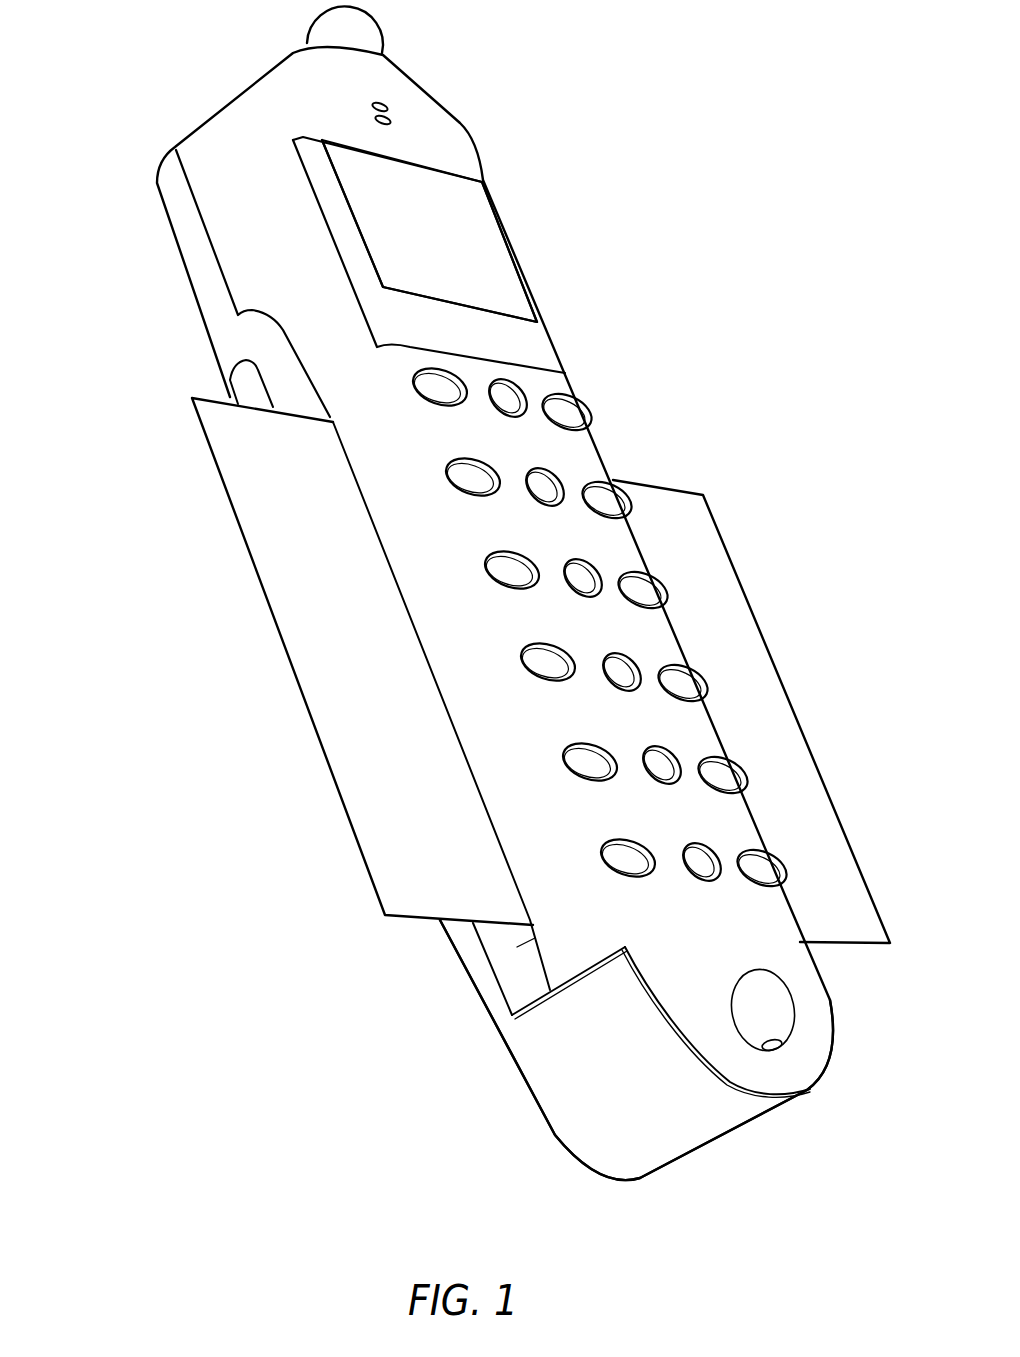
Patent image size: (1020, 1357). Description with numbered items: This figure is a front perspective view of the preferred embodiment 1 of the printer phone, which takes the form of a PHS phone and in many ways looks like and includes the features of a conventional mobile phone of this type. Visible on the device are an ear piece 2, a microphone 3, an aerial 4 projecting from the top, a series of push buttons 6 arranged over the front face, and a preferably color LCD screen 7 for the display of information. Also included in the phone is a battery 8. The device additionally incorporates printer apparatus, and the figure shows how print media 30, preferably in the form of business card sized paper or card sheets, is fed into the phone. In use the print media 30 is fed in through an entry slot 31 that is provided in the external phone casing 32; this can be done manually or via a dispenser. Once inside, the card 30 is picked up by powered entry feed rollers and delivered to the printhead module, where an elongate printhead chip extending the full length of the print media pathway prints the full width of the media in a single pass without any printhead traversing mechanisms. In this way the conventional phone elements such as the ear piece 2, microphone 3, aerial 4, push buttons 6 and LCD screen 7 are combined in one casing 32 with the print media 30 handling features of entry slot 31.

The preferred embodiment 1 is at (108, 245).
The ear piece 2 is at (410, 98).
The microphone 3 is at (767, 1010).
The aerial 4 is at (342, 32).
The push buttons 6 is at (723, 742).
The LCD screen 7 is at (453, 220).
The battery 8 is at (583, 1113).
The print media 30 is at (318, 643).
The entry slot 31 is at (518, 935).
The external phone casing 32 is at (565, 950).